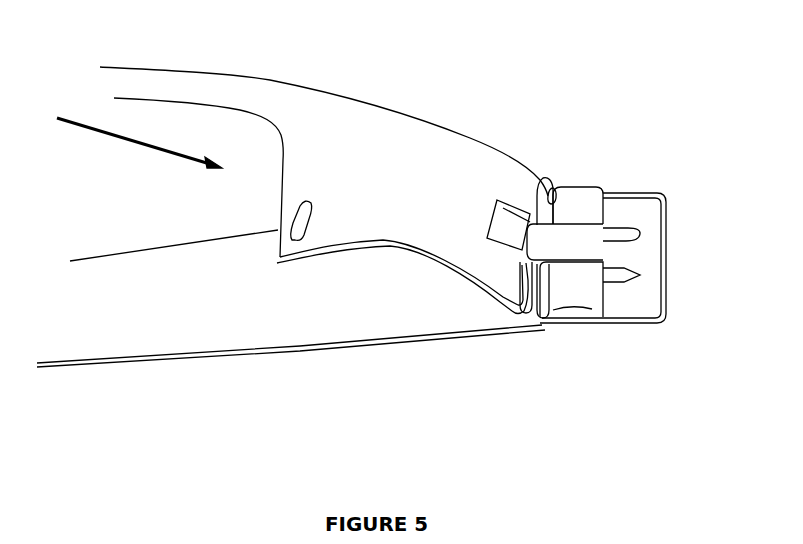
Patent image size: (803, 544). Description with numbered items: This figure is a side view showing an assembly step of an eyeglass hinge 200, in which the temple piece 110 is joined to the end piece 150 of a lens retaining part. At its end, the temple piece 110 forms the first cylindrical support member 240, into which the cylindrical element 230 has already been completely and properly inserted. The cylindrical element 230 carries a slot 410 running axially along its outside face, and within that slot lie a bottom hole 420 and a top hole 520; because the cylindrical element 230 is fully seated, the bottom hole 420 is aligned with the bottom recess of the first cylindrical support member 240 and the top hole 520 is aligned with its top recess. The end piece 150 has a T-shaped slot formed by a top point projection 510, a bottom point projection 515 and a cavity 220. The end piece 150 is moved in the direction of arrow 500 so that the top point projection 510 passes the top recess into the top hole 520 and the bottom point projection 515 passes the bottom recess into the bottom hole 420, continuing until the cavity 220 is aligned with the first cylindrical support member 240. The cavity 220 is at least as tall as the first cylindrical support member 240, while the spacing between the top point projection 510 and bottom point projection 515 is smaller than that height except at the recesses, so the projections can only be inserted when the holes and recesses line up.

The temple piece 110 is at (240, 295).
The end piece 150 is at (402, 178).
The eyeglass hinge 200 is at (627, 145).
The cavity 220 is at (495, 200).
The cylindrical element 230 is at (578, 290).
The first cylindrical support member 240 is at (563, 240).
The slot 410 is at (538, 300).
The bottom hole 420 is at (527, 307).
The arrow 500 is at (107, 135).
The top point projection 510 is at (535, 200).
The bottom point projection 515 is at (527, 263).
The top hole 520 is at (553, 198).